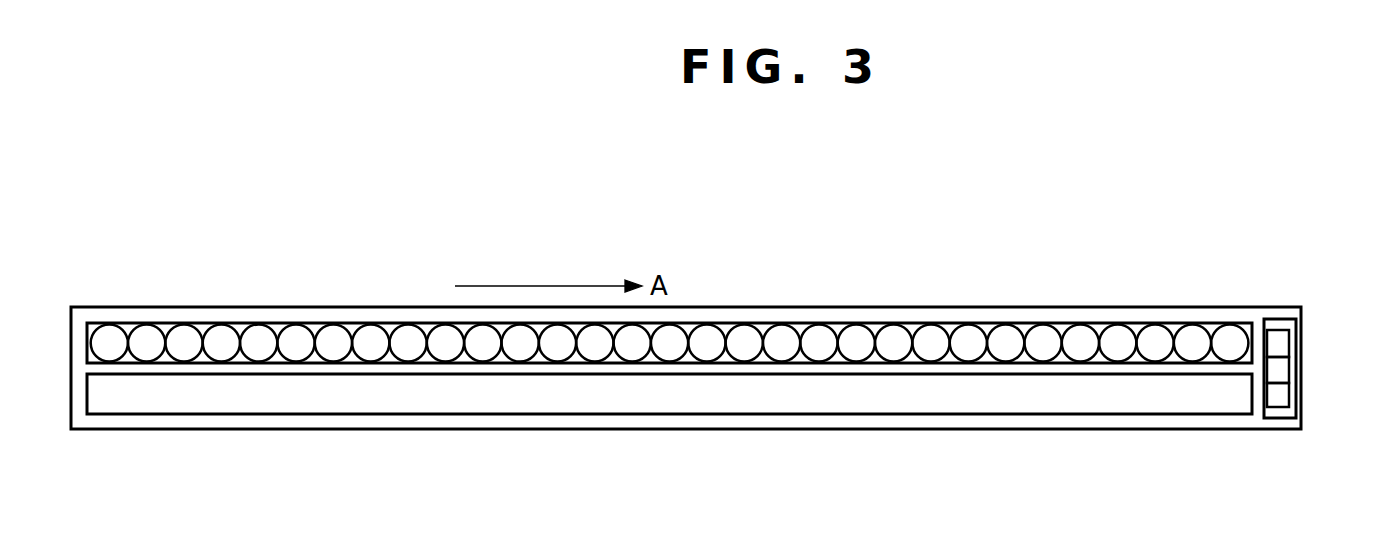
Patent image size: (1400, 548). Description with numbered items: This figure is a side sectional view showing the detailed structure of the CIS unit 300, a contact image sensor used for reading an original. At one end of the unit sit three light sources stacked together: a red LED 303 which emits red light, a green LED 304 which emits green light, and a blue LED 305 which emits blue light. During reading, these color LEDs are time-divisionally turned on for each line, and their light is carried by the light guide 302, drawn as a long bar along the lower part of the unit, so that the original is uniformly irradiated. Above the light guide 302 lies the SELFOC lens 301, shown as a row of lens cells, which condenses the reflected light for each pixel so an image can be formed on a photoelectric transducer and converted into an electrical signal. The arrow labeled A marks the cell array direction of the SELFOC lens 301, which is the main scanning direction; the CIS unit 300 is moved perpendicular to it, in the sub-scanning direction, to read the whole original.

The CIS unit 300 is at (748, 217).
The SELFOC lens 301 is at (182, 340).
The light guide 302 is at (433, 392).
The red LED 303 is at (1280, 343).
The green LED 304 is at (1280, 367).
The blue LED 305 is at (1280, 393).